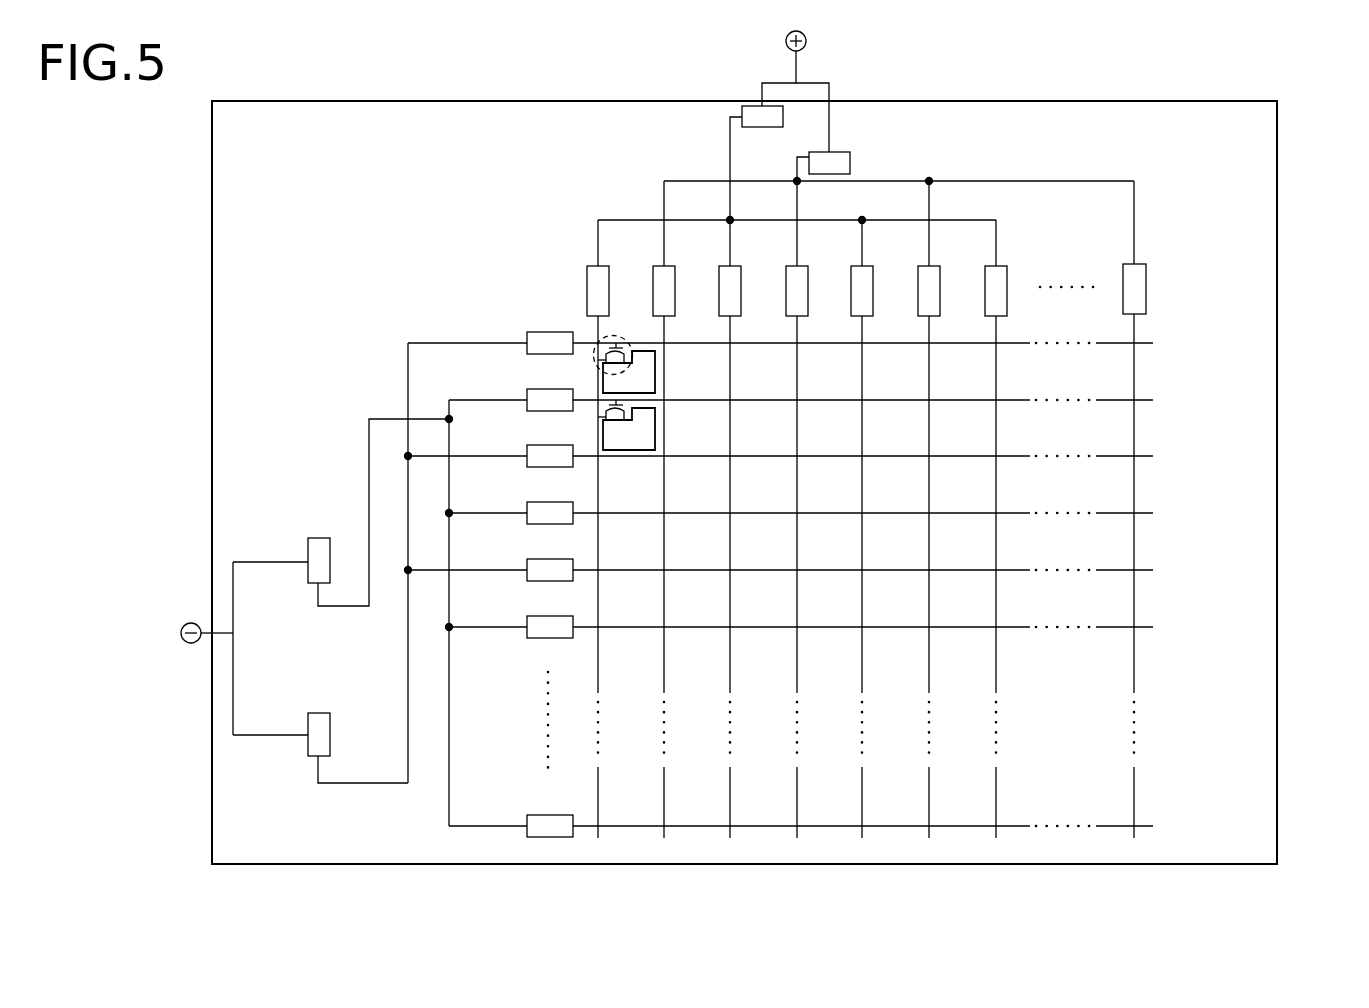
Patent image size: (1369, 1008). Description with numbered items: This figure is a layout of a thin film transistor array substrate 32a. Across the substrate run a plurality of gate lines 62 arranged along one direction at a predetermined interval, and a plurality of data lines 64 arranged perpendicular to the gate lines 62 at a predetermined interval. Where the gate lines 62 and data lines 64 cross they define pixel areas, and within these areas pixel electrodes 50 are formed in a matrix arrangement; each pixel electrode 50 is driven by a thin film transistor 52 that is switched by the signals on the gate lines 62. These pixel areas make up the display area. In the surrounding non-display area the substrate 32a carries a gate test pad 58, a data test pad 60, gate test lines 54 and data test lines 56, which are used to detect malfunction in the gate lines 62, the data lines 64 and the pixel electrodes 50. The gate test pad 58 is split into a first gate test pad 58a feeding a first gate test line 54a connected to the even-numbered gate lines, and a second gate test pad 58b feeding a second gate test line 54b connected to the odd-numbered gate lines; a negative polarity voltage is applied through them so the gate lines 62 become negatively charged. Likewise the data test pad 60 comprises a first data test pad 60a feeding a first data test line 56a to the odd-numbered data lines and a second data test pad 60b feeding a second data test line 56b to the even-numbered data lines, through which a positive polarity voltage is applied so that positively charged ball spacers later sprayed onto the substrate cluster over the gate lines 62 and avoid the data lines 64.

The thin film transistor array substrate 32a is at (1277, 432).
The pixel electrode 50 is at (655, 430).
The thin film transistor 52 is at (655, 358).
The gate test line 54 is at (445, 571).
The first gate test line 54a is at (337, 606).
The second gate test line 54b is at (368, 783).
The data test line 56 is at (889, 248).
The first data test line 56a is at (996, 254).
The second data test line 56b is at (1134, 232).
The gate test pad 58 is at (255, 647).
The first gate test pad 58a is at (310, 585).
The second gate test pad 58b is at (305, 714).
The data test pad 60 is at (847, 125).
The first data test pad 60a is at (783, 112).
The second data test pad 60b is at (850, 160).
The gate line 62 is at (640, 828).
The data line 64 is at (1140, 357).